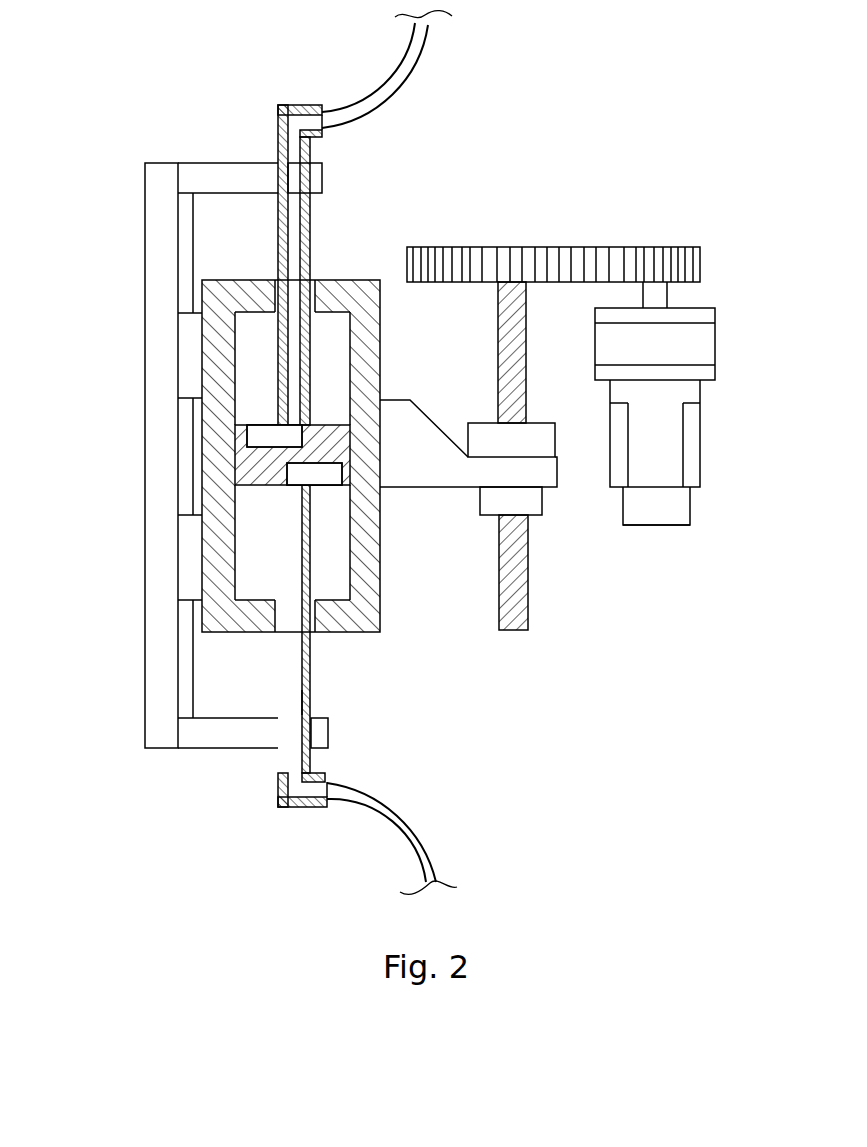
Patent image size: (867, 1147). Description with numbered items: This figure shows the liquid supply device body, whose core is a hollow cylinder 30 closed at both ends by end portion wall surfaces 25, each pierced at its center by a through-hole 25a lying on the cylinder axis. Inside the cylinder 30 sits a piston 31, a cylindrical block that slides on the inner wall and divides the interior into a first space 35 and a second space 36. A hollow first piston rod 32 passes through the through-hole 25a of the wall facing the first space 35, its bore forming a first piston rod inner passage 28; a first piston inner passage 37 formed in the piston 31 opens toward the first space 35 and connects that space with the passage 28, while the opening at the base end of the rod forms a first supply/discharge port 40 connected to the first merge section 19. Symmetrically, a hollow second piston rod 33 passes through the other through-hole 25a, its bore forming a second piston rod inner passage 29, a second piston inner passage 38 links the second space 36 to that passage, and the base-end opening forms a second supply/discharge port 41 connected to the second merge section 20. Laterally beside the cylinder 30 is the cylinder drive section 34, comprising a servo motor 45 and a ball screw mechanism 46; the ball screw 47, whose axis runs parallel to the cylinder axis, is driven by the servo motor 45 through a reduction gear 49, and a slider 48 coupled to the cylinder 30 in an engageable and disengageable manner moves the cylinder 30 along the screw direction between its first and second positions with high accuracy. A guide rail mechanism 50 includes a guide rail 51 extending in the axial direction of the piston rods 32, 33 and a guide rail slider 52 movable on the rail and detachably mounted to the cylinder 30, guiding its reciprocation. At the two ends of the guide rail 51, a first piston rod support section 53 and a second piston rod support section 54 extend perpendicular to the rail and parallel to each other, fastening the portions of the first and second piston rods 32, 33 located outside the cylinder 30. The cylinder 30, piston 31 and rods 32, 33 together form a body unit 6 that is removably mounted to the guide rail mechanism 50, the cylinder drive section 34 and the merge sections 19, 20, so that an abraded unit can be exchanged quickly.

The body unit 6 is at (260, 441).
The first merge section 19 is at (403, 73).
The second merge section 20 is at (407, 828).
The end portion wall surface 25 is at (341, 290).
The through-hole 25a is at (277, 290).
The first piston rod inner passage 28 is at (288, 218).
The second piston rod inner passage 29 is at (313, 685).
The cylinder 30 is at (373, 620).
The piston 31 is at (257, 470).
The first piston rod 32 is at (306, 208).
The second piston rod 33 is at (300, 703).
The cylinder drive section 34 is at (644, 547).
The first space 35 is at (340, 336).
The second space 36 is at (335, 557).
The first piston inner passage 37 is at (257, 433).
The second piston inner passage 38 is at (335, 472).
The first supply/discharge port 40 is at (306, 152).
The second supply/discharge port 41 is at (280, 758).
The servo motor 45 is at (708, 342).
The ball screw mechanism 46 is at (515, 630).
The ball screw 47 is at (510, 322).
The slider 48 is at (433, 480).
The reduction gear 49 is at (583, 267).
The guide rail mechanism 50 is at (152, 181).
The guide rail 51 is at (180, 231).
The guide rail slider 52 is at (190, 325).
The first piston rod support section 53 is at (208, 180).
The second piston rod support section 54 is at (193, 732).